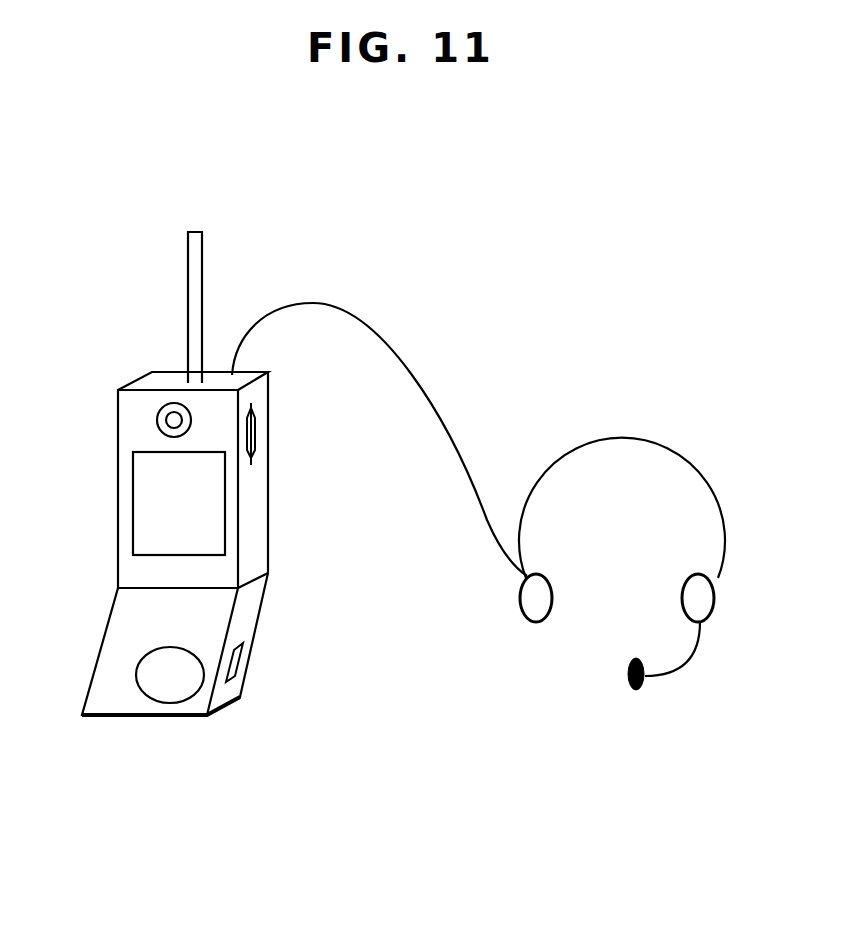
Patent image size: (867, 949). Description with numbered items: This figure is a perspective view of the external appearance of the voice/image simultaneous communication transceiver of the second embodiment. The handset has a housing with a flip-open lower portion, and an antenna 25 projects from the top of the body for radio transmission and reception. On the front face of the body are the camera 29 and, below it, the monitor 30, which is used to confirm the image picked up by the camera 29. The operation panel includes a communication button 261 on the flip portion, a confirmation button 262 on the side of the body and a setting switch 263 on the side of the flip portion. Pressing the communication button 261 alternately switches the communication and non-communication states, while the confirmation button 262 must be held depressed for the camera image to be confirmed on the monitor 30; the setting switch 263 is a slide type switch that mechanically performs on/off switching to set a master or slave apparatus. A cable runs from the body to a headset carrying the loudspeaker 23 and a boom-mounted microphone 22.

The microphone 22 is at (632, 692).
The loudspeaker 23 is at (523, 622).
The antenna 25 is at (198, 271).
The camera 29 is at (167, 407).
The monitor 30 is at (143, 505).
The communication button 261 is at (160, 690).
The confirmation button 262 is at (257, 441).
The setting switch 263 is at (240, 663).